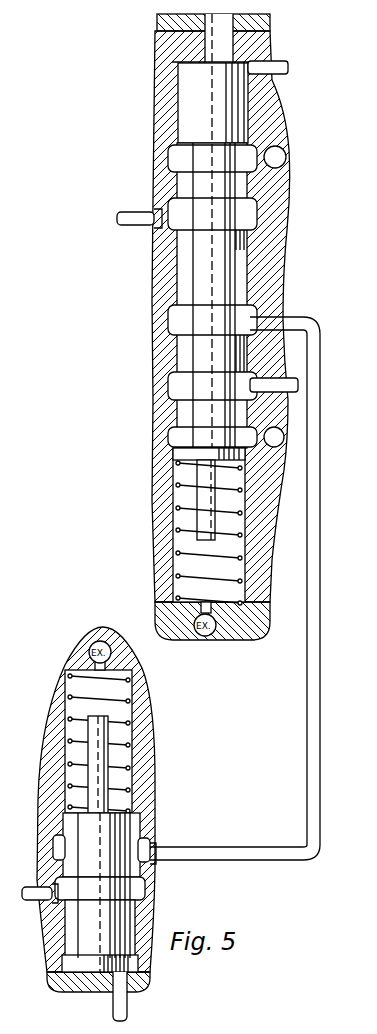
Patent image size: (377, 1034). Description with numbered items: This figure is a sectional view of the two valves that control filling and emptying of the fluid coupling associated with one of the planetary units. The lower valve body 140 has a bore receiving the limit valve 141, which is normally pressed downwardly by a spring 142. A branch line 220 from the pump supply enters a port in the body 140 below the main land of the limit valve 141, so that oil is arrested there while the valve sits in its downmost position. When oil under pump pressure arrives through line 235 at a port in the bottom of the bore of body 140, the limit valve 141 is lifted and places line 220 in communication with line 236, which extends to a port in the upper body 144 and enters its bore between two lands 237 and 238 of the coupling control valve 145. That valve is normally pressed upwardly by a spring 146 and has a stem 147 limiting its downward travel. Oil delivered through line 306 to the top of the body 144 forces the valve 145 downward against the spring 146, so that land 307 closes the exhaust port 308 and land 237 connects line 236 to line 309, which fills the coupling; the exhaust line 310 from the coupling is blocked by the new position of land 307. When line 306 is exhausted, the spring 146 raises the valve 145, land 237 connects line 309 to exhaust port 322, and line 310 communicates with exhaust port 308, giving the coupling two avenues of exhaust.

The body 144 is at (158, 556).
The land 307 is at (180, 114).
The line 306 is at (272, 68).
The land 237 is at (182, 367).
The coupling control valve 145 is at (197, 300).
The land 238 is at (243, 241).
The exhaust line 310 is at (150, 214).
The line 309 is at (282, 383).
The exhaust port 308 is at (283, 166).
The exhaust port 322 is at (280, 450).
The stem 147 is at (200, 479).
The spring 146 is at (182, 530).
The line 236 is at (228, 852).
The valve body 140 is at (152, 765).
The spring 142 is at (128, 722).
The limit valve 141 is at (140, 868).
The branch line 220 is at (44, 897).
The line 235 is at (117, 990).